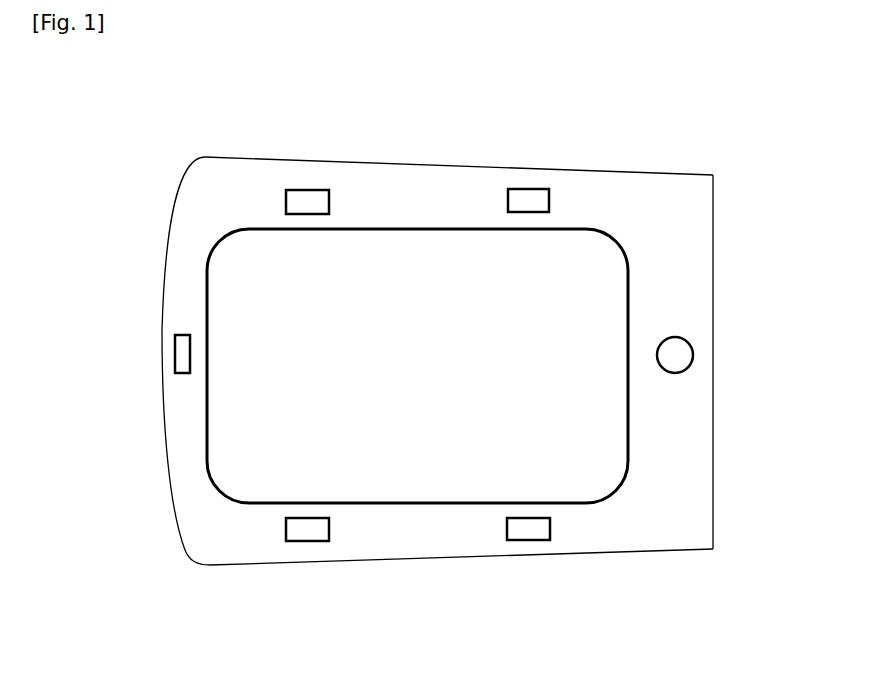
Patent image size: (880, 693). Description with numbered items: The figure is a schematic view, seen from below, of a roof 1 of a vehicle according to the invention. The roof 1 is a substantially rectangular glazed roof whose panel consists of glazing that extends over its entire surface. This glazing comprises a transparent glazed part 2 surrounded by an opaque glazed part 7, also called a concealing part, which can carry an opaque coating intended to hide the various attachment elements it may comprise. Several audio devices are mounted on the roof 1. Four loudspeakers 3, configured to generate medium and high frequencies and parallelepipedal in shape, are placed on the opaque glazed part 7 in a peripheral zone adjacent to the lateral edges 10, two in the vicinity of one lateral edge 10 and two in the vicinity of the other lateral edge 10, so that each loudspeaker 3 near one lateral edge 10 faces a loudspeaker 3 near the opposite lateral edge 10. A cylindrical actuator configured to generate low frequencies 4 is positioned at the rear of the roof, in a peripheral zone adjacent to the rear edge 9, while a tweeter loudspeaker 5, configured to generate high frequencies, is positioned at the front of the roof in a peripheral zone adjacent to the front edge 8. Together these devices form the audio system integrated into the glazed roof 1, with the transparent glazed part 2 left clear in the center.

The roof 1 is at (428, 380).
The transparent glazed part 2 is at (205, 453).
The loudspeaker 3 is at (303, 190).
The actuator configured to generate low frequencies 4 is at (693, 348).
The tweeter loudspeaker 5 is at (175, 355).
The opaque glazed part 7 is at (197, 512).
The front edge 8 is at (160, 303).
The rear edge 9 is at (713, 442).
The lateral edge 10 is at (390, 163).